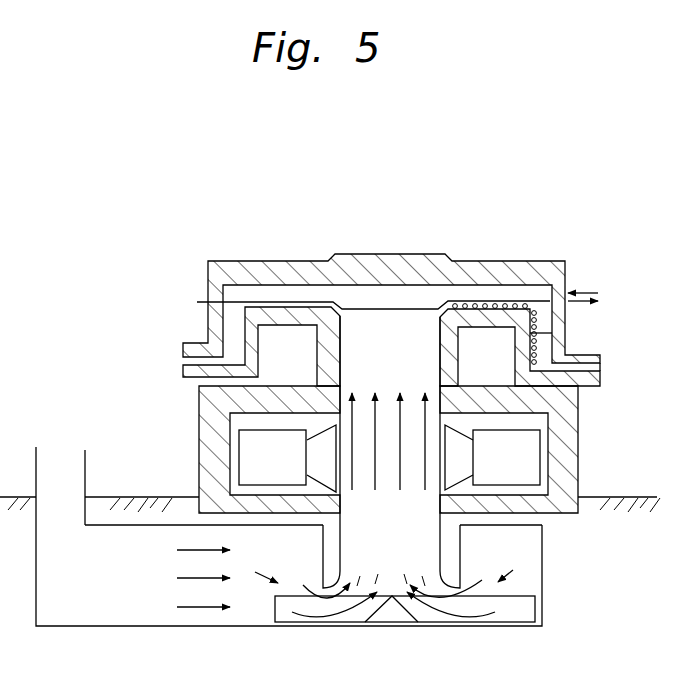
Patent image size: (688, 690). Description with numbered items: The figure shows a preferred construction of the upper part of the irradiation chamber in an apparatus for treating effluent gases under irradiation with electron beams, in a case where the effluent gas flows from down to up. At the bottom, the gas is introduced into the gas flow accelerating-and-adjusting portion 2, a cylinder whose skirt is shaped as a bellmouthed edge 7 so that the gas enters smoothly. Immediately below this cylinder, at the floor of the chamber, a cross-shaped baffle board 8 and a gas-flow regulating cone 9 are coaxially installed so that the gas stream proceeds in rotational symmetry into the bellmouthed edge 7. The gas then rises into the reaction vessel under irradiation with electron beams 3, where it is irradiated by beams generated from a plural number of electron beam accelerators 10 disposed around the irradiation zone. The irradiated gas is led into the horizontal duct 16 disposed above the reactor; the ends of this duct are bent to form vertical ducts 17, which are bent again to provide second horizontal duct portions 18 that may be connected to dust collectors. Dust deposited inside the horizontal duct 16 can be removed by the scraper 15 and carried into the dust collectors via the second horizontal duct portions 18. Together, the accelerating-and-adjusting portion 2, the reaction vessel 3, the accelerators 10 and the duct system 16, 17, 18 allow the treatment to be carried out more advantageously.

The gas flow accelerating-and-adjusting portion 2 is at (462, 557).
The reaction vessel under irradiation with electron beams 3 is at (335, 420).
The bellmouthed edge 7 is at (333, 582).
The cross-shaped baffle board 8 is at (513, 595).
The gas-flow regulating cone 9 is at (415, 616).
The electron beam accelerators 10 is at (515, 428).
The scraper 15 is at (450, 300).
The horizontal duct 16 is at (502, 290).
The vertical ducts 17 is at (543, 318).
The second horizontal duct portions 18 is at (545, 369).